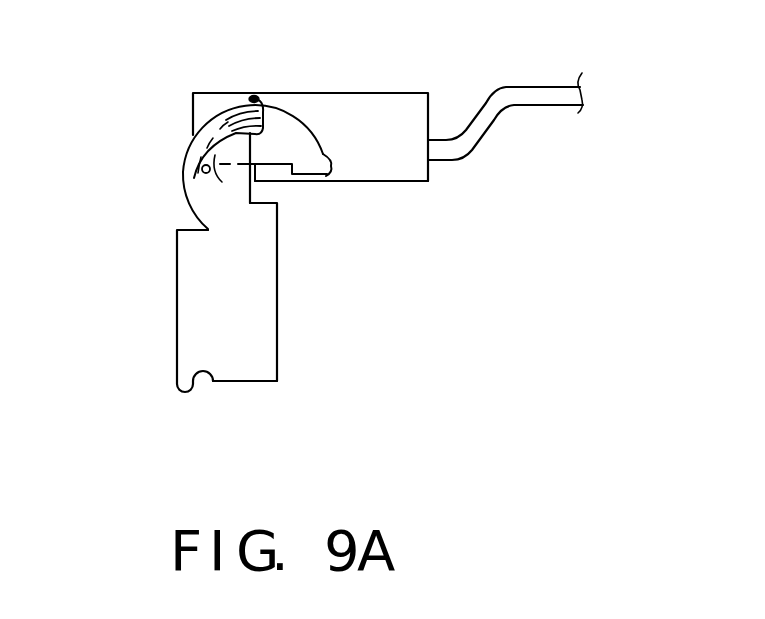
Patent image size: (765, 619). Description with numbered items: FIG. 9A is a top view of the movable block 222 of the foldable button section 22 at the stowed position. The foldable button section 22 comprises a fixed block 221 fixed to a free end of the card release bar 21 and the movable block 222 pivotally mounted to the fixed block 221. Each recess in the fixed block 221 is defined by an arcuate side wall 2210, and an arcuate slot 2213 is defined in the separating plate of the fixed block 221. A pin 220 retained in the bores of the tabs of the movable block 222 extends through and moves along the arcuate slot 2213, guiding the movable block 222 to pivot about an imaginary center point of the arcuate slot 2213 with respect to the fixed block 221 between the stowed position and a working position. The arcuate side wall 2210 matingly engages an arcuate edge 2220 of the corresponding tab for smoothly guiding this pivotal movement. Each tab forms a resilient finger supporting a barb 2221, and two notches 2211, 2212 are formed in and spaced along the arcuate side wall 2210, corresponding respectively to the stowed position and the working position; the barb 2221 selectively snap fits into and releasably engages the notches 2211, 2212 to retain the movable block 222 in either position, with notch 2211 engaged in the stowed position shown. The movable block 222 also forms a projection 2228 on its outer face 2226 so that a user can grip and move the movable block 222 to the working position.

The card release bar 21 is at (537, 100).
The foldable button section 22 is at (398, 92).
The pin 220 is at (198, 188).
The fixed block 221 is at (428, 181).
The movable block 222 is at (262, 268).
The arcuate side wall 2210 is at (307, 110).
The notch 2211 is at (258, 100).
The notch 2212 is at (327, 176).
The arcuate slot 2213 is at (200, 125).
The arcuate edge 2220 is at (203, 168).
The barb 2221 is at (250, 93).
The outer face 2226 is at (245, 383).
The projection 2228 is at (185, 380).